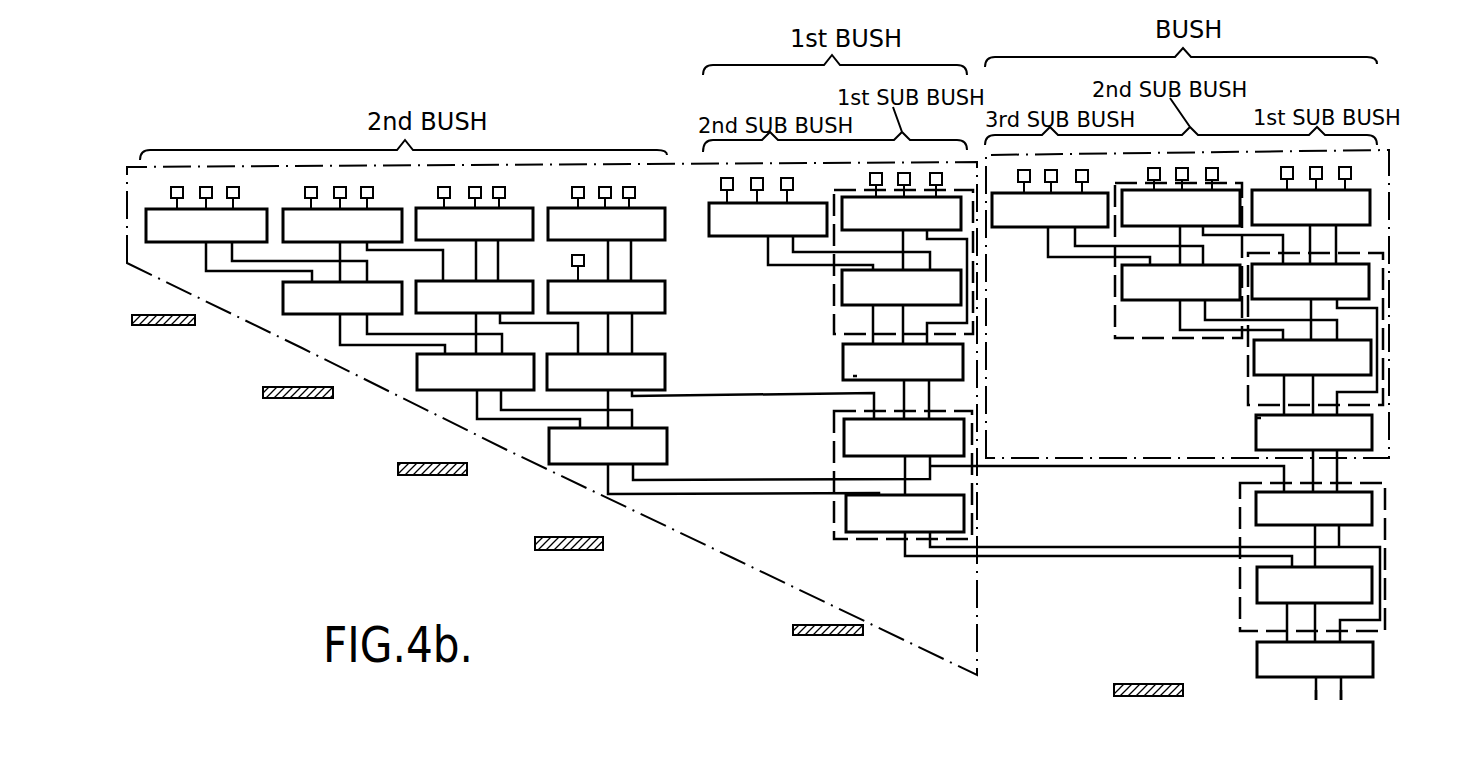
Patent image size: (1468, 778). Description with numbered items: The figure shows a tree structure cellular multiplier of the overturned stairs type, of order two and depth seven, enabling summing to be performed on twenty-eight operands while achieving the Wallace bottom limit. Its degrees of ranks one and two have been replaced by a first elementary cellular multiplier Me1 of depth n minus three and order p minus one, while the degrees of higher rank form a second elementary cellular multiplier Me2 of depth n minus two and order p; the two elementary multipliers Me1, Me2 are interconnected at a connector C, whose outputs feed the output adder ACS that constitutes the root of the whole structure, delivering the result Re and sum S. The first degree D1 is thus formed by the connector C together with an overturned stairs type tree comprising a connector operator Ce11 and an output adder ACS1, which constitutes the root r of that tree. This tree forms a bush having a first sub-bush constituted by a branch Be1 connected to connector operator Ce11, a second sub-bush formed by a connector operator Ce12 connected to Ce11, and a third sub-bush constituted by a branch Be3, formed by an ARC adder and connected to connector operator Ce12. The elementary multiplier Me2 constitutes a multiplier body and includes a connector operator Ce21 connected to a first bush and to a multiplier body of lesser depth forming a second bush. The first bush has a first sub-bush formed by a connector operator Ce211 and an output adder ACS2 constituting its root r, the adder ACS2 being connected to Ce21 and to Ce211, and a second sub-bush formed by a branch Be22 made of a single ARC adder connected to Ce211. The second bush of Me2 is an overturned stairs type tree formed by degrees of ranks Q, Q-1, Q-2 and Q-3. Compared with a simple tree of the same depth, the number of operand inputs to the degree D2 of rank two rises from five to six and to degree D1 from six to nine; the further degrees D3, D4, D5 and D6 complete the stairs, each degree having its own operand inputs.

The degree of rank Q is at (206, 158).
The degree of rank Q-1 is at (342, 194).
The degree of rank Q-2 is at (475, 232).
The degree of rank Q-3 is at (607, 268).
The branch Be22 is at (727, 231).
The branch Be3 is at (1021, 215).
The branch Be1 is at (1358, 208).
The connector operator Ce211 is at (837, 323).
The connector operator Ce21 is at (843, 522).
The connector operator Ce12 is at (1125, 330).
The connector operator Ce11 is at (1257, 395).
The output adder ACS2 is at (847, 357).
The output adder ACS1 is at (1256, 433).
The output adder ACS is at (1368, 660).
The root r is at (853, 375).
The connector C is at (1382, 518).
The first elementary cellular multiplier Me1 is at (1380, 438).
The second elementary cellular multiplier Me2 is at (697, 532).
The degree of rank 1 D1 is at (1148, 674).
The degree of rank 2 D2 is at (827, 617).
The delay D3 is at (569, 530).
The delay D4 is at (432, 455).
The delay D5 is at (298, 379).
The delay D6 is at (161, 304).
The result output Re is at (1314, 709).
The sum output S is at (1345, 709).